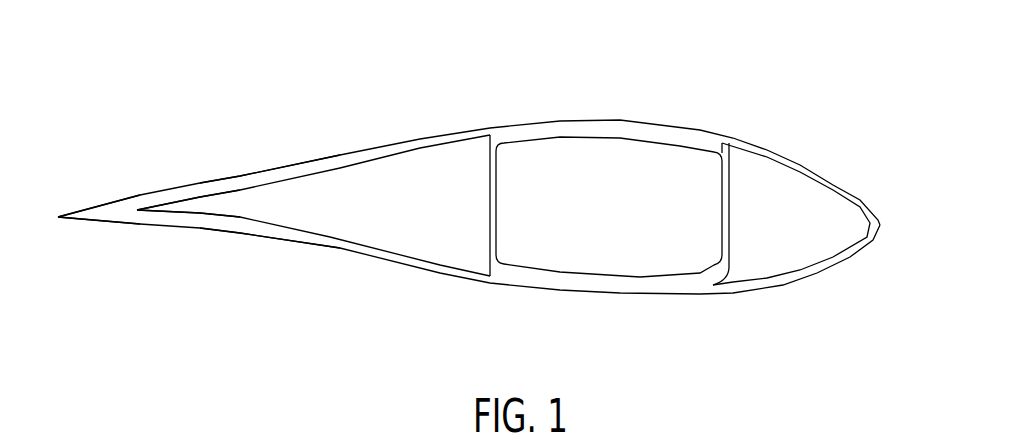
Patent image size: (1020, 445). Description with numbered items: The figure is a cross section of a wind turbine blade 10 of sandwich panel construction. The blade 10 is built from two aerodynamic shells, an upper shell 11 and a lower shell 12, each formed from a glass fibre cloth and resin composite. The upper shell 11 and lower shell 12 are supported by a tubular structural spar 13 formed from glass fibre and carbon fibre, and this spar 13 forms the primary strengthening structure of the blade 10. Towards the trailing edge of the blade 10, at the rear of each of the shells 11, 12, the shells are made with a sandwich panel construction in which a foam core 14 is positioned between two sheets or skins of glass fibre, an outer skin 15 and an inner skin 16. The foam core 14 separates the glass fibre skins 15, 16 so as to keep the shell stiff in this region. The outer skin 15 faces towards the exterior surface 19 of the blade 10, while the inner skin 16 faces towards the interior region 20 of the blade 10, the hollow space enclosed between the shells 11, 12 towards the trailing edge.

The wind turbine blade 10 is at (469, 179).
The upper shell 11 is at (330, 157).
The lower shell 12 is at (213, 230).
The tubular structural spar 13 is at (626, 266).
The foam core 14 is at (237, 178).
The outer skin 15 is at (287, 168).
The inner skin 16 is at (370, 160).
The exterior surface 19 is at (155, 193).
The interior region 20 is at (312, 218).